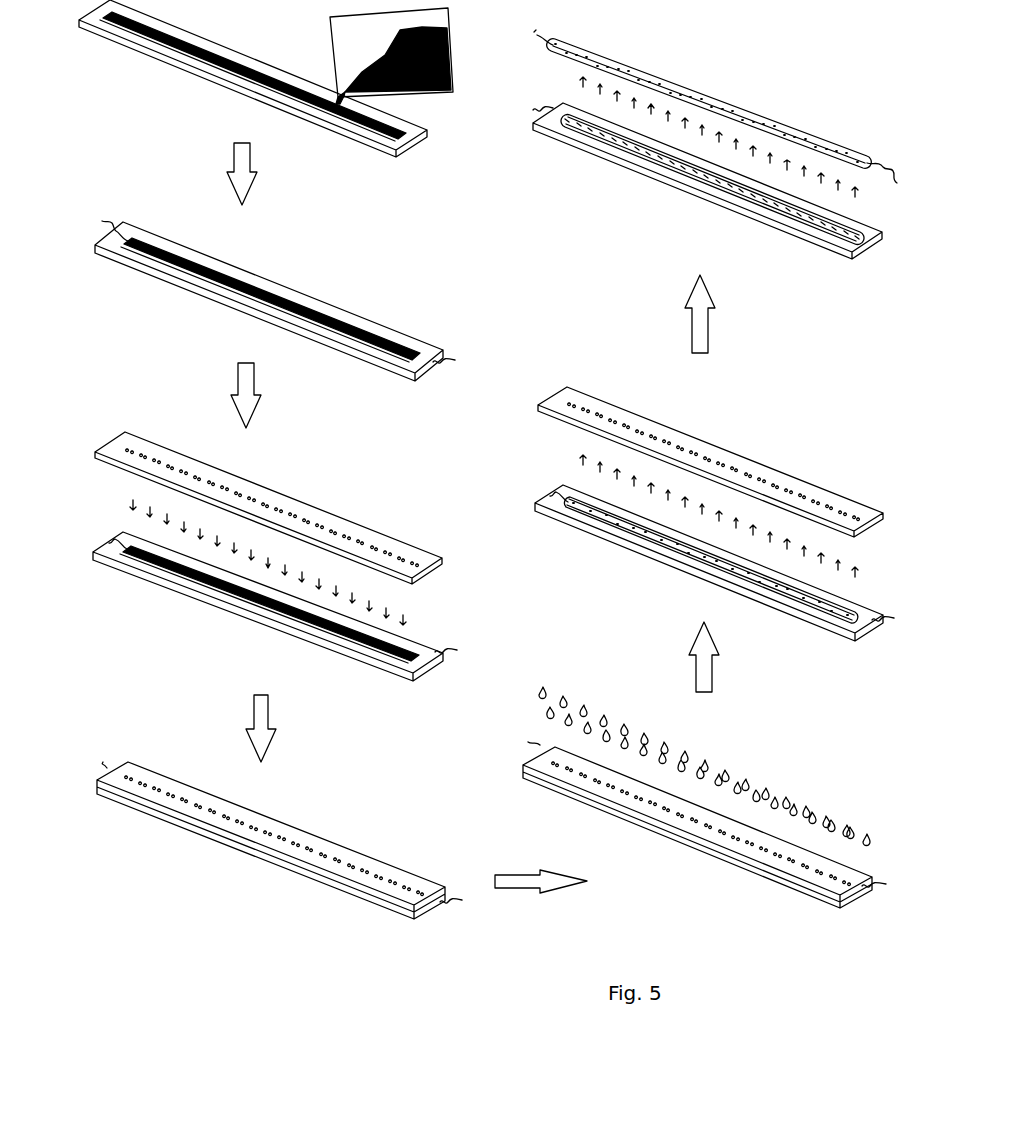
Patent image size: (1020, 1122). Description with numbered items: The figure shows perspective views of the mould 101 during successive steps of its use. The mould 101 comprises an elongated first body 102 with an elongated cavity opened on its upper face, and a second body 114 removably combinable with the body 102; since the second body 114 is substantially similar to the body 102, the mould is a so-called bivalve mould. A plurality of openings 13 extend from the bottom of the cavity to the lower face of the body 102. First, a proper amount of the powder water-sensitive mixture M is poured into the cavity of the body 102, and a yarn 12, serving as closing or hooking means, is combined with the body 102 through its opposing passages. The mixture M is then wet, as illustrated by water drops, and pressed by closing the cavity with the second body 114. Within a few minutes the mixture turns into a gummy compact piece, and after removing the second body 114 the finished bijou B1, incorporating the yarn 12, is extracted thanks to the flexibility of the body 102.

The mould 101 is at (348, 709).
The elongated body 102 is at (137, 61).
The second body 114 is at (377, 523).
The openings 13 is at (288, 838).
The yarn 12 is at (89, 204).
The mixture M is at (450, 70).
The bijou B1 is at (850, 610).